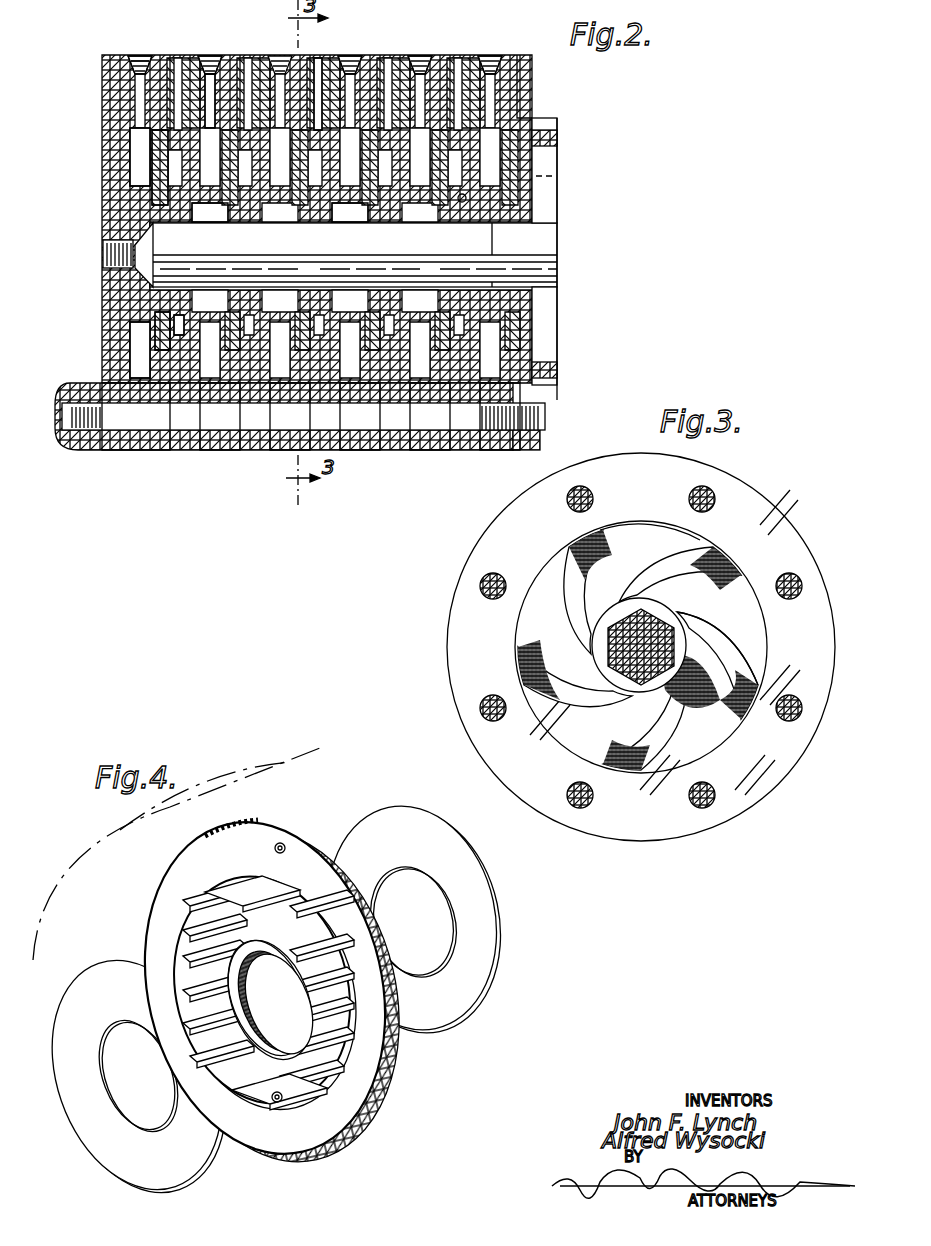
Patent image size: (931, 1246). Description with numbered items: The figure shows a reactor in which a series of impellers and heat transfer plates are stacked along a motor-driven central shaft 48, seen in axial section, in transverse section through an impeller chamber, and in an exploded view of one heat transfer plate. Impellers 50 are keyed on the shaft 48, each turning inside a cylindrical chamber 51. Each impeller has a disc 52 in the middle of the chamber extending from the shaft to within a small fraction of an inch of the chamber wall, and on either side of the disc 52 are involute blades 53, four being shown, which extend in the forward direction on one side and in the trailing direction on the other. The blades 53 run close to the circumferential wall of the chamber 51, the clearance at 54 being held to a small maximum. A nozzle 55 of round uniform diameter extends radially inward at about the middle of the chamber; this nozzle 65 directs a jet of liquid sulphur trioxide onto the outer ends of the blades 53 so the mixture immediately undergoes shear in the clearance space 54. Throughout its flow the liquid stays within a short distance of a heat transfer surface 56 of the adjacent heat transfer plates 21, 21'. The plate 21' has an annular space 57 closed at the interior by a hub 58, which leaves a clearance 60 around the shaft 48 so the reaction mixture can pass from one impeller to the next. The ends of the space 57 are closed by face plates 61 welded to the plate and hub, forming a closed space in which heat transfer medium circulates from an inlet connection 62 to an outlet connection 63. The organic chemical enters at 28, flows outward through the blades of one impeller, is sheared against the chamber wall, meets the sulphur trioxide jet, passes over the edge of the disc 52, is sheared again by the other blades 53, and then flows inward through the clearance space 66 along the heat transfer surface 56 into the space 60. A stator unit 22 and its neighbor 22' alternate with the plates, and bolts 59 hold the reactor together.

In FIG. 2, the heat transfer plate 21 is at (135, 440).
In FIG. 2, the heat transfer plate 21' is at (218, 440).
In FIG. 4, the heat transfer plate 21' is at (269, 992).
In FIG. 2, the stator unit 22 is at (115, 62).
In FIG. 2, the stator unit 22' is at (222, 296).
In FIG. 2, the organic chemical inlet 28 is at (106, 253).
In FIG. 2, the central shaft 48 is at (538, 253).
In FIG. 3, the central shaft 48 is at (628, 640).
In FIG. 2, the impeller 50 is at (193, 222).
In FIG. 3, the impeller 50 is at (712, 636).
In FIG. 2, the cylindrical chamber 51 is at (183, 374).
In FIG. 3, the cylindrical chamber 51 is at (665, 530).
In FIG. 2, the disc 52 is at (174, 348).
In FIG. 3, the disc 52 is at (566, 662).
In FIG. 2, the involute blades 53 is at (160, 142).
In FIG. 3, the involute blades 53 is at (562, 732).
In FIG. 3, the clearance 54 is at (566, 568).
In FIG. 2, the nozzle 55 is at (320, 60).
In FIG. 2, the heat transfer surface 56 is at (216, 308).
In FIG. 4, the heat transfer surface 56 is at (480, 897).
In FIG. 4, the annular space 57 is at (338, 1078).
In FIG. 4, the hub 58 is at (269, 1000).
In FIG. 2, the bolts 59 is at (86, 446).
In FIG. 2, the clearance space 60 is at (214, 212).
In FIG. 4, the clearance space 60 is at (226, 897).
In FIG. 4, the face plates 61 is at (166, 1172).
In FIG. 2, the inlet connection 62 is at (213, 72).
In FIG. 4, the inlet connection 62 is at (281, 844).
In FIG. 4, the outlet connection 63 is at (280, 1100).
In FIG. 2, the nozzle 65 is at (162, 112).
In FIG. 2, the clearance space 66 is at (462, 198).